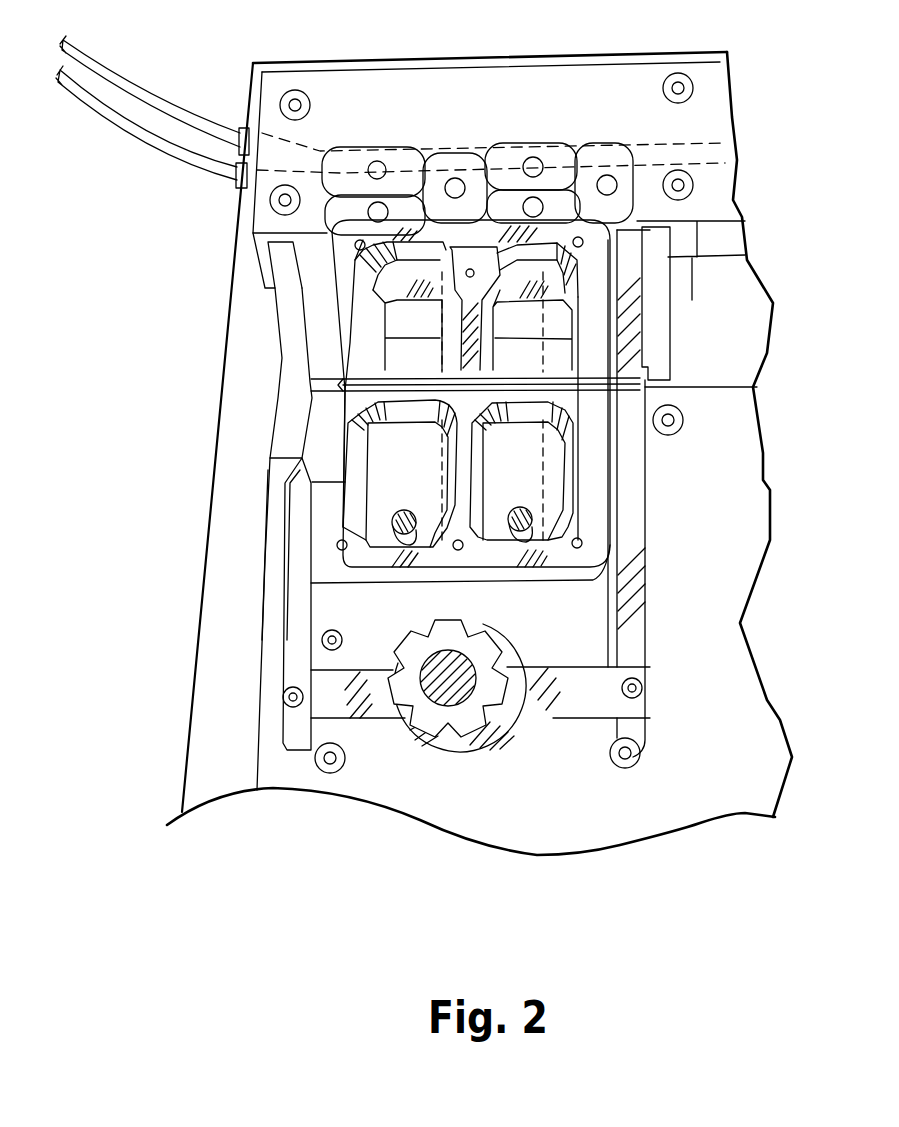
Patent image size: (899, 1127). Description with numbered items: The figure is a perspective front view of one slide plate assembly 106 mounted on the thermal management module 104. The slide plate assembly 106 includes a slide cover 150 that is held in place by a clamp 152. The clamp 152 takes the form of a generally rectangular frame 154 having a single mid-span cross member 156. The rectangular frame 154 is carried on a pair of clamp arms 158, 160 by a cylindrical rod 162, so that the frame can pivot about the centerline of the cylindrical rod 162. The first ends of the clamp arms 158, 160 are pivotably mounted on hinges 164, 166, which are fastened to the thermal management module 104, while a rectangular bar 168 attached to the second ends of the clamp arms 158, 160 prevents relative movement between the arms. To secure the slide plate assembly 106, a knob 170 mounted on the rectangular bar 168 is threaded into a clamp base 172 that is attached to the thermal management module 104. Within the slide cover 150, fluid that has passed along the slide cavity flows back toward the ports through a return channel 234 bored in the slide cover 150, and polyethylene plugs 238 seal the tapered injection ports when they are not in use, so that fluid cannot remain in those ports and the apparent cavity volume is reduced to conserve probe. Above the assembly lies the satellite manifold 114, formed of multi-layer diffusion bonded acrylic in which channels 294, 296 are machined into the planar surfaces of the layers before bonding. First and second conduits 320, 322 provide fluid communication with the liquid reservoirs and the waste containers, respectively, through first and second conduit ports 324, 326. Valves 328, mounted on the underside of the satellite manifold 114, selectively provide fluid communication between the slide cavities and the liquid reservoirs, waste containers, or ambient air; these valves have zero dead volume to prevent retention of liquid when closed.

The thermal management module 104 is at (710, 774).
The slide plate assembly 106 is at (707, 362).
The satellite manifold 114 is at (553, 110).
The slide cover 150 is at (392, 465).
The clamp 152 is at (222, 511).
The rectangular frame 154 is at (598, 482).
The mid-span cross member 156 is at (345, 408).
The clamp arm 158 is at (285, 450).
The clamp arm 160 is at (630, 565).
The cylindrical rod 162 is at (757, 389).
The hinge 164 is at (268, 289).
The hinge 166 is at (653, 290).
The rectangular bar 168 is at (566, 700).
The knob 170 is at (453, 723).
The clamp base 172 is at (488, 745).
The return channel 234 is at (443, 354).
The polyethylene plug 238 is at (392, 527).
The channel 294 is at (707, 142).
The channel 296 is at (710, 160).
The first conduit 320 is at (115, 85).
The second conduit 322 is at (128, 133).
The first conduit port 324 is at (260, 133).
The second conduit port 326 is at (258, 172).
The valve 328 is at (350, 180).